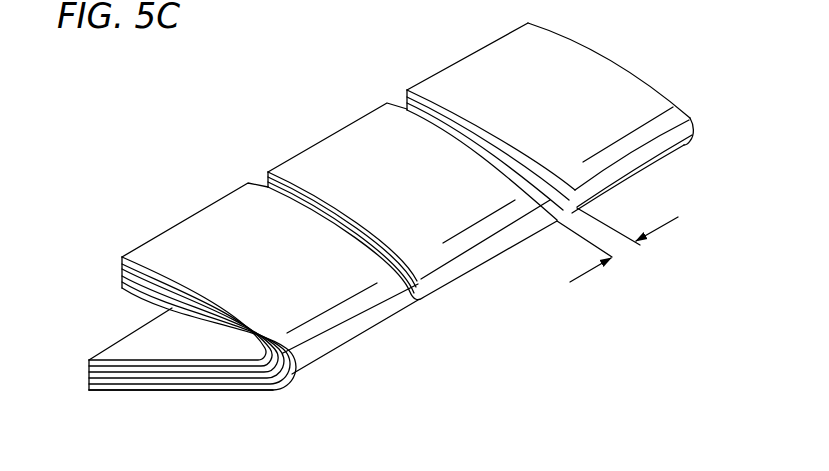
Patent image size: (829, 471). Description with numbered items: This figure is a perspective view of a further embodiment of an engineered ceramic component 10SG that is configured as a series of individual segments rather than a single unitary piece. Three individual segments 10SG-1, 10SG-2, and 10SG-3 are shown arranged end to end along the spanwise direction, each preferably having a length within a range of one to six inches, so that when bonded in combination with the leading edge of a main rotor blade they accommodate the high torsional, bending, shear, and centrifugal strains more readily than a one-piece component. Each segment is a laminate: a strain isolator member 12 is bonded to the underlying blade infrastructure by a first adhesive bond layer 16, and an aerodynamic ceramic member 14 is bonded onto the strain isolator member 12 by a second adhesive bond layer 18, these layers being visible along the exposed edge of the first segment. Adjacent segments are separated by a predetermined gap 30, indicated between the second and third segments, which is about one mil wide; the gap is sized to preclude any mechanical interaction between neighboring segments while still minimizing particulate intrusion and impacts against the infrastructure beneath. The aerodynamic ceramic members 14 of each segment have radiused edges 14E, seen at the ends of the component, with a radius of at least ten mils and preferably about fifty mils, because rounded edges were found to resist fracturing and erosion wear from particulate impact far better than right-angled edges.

The engineered ceramic component 10SG is at (466, 340).
The individual segment 10SG-1 is at (213, 232).
The individual segment 10SG-2 is at (362, 148).
The individual segment 10SG-3 is at (509, 63).
The aerodynamic ceramic member 14 is at (122, 259).
The first adhesive bond layer 16 is at (122, 269).
The strain isolator member 12 is at (122, 277).
The second adhesive bond layer 18 is at (121, 288).
The radiused edges 14E is at (180, 395).
The predetermined gap 30 is at (627, 252).